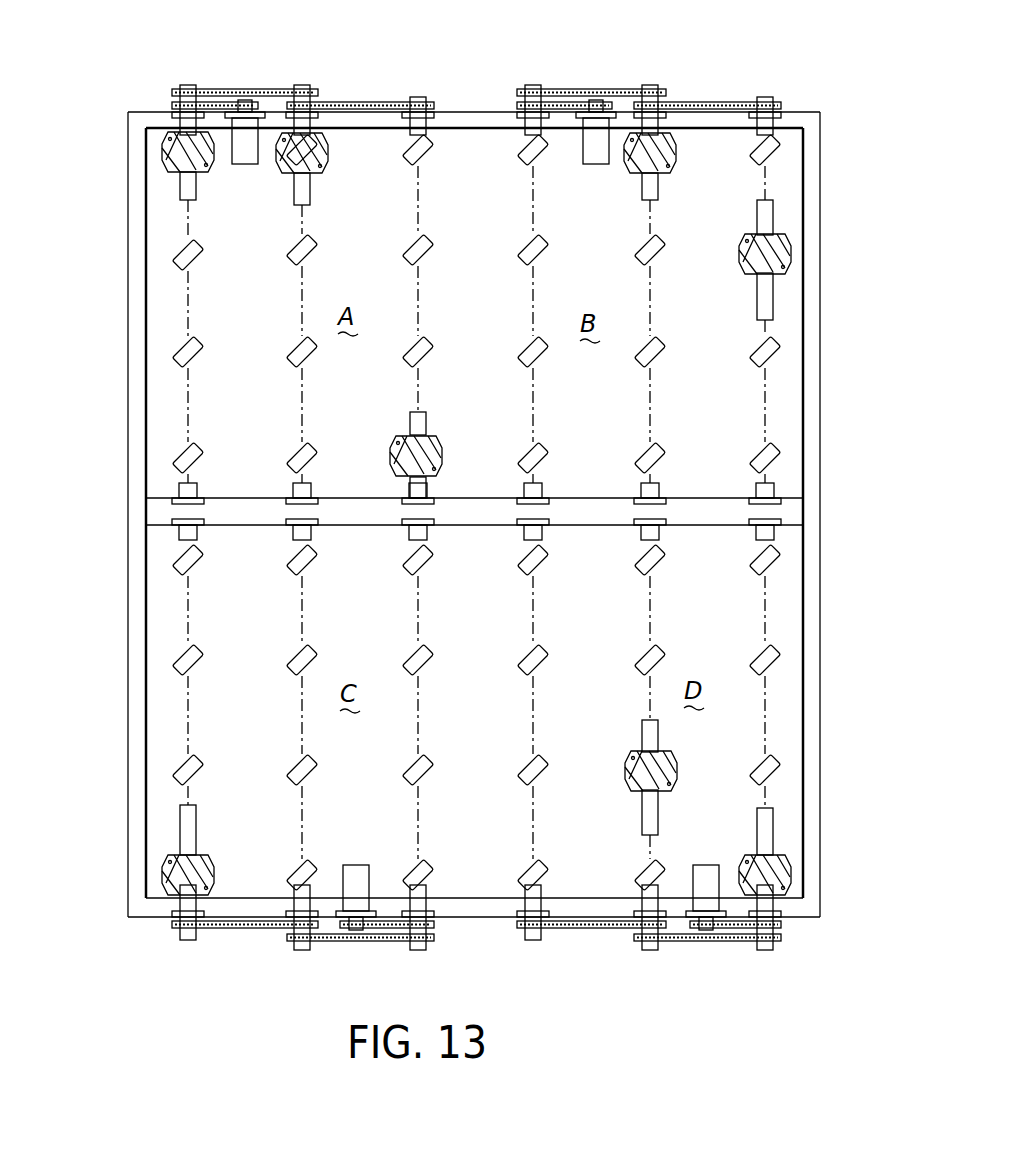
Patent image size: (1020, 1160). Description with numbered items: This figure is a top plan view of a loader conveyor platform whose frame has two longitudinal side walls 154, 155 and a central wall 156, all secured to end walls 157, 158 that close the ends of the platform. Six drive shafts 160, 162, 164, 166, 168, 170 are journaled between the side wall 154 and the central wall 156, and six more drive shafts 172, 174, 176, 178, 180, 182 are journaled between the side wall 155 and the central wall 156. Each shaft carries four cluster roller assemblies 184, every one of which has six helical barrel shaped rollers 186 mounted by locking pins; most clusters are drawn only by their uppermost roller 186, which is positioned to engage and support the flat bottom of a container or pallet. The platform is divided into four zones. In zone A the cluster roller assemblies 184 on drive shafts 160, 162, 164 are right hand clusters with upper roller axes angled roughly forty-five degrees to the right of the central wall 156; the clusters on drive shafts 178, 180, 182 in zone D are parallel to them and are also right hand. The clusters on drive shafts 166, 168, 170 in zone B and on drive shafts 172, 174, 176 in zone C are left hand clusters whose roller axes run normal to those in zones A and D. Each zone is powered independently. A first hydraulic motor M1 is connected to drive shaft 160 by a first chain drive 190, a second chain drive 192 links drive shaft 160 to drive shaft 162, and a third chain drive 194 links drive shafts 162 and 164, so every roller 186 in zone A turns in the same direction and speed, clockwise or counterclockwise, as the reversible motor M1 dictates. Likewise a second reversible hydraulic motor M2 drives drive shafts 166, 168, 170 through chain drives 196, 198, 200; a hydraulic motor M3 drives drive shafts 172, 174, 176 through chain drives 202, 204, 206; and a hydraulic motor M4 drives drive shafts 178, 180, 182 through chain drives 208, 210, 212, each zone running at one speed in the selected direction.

The side wall 154 is at (140, 118).
The side wall 155 is at (480, 918).
The central wall 156 is at (365, 518).
The end wall 157 is at (140, 462).
The end wall 158 is at (812, 432).
The drive shaft 160 is at (198, 187).
The drive shaft 162 is at (293, 202).
The drive shaft 164 is at (433, 130).
The drive shaft 166 is at (518, 126).
The drive shaft 168 is at (660, 184).
The drive shaft 170 is at (773, 133).
The drive shaft 172 is at (196, 537).
The drive shaft 174 is at (294, 545).
The drive shaft 176 is at (426, 538).
The drive shaft 178 is at (545, 536).
The drive shaft 180 is at (660, 536).
The drive shaft 182 is at (757, 538).
The cluster roller assembly 184 is at (168, 182).
The helical barrel shaped roller 186 is at (205, 270).
The first chain drive 190 is at (170, 105).
The second chain drive 192 is at (240, 89).
The third chain drive 194 is at (368, 102).
The chain drive 196 is at (563, 98).
The chain drive 198 is at (620, 92).
The chain drive 200 is at (737, 101).
The chain drive 202 is at (390, 942).
The chain drive 204 is at (335, 943).
The chain drive 206 is at (235, 930).
The chain drive 208 is at (788, 930).
The chain drive 210 is at (714, 944).
The chain drive 212 is at (574, 930).
The first hydraulic motor M1 is at (250, 150).
The second hydraulic motor M2 is at (596, 150).
The hydraulic motor M3 is at (355, 873).
The hydraulic motor M4 is at (708, 880).